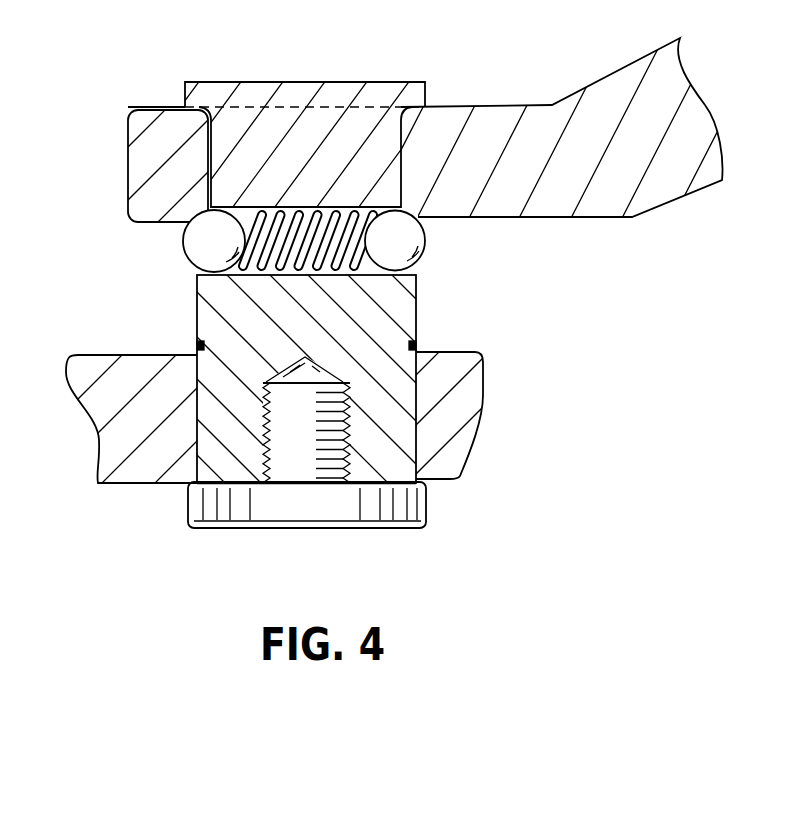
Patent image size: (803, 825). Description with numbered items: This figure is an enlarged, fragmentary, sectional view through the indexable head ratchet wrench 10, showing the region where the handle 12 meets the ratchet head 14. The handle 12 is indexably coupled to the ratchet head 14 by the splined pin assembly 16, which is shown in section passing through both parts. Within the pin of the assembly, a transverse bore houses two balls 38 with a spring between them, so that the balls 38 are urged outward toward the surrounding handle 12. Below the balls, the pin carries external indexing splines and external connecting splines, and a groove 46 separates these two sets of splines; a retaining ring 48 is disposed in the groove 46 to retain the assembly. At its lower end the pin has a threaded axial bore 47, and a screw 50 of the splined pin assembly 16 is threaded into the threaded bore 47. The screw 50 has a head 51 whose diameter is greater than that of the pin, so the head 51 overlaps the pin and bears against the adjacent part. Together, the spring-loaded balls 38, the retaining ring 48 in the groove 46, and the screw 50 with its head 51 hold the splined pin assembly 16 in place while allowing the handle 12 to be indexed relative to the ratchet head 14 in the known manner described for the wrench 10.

The indexable head ratchet wrench 10 is at (401, 291).
The handle 12 is at (591, 100).
The ratchet head 14 is at (157, 472).
The splined pin assembly 16 is at (361, 95).
The balls 38 is at (426, 232).
The groove 46 is at (400, 339).
The threaded axial bore 47 is at (333, 465).
The retaining ring 48 is at (414, 345).
The screw 50 is at (402, 538).
The head 51 is at (243, 515).